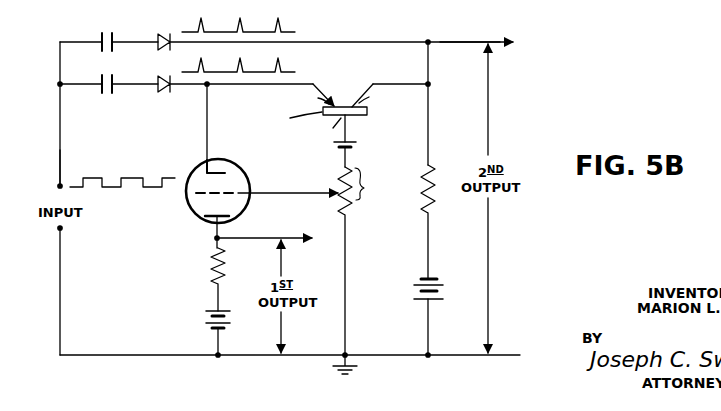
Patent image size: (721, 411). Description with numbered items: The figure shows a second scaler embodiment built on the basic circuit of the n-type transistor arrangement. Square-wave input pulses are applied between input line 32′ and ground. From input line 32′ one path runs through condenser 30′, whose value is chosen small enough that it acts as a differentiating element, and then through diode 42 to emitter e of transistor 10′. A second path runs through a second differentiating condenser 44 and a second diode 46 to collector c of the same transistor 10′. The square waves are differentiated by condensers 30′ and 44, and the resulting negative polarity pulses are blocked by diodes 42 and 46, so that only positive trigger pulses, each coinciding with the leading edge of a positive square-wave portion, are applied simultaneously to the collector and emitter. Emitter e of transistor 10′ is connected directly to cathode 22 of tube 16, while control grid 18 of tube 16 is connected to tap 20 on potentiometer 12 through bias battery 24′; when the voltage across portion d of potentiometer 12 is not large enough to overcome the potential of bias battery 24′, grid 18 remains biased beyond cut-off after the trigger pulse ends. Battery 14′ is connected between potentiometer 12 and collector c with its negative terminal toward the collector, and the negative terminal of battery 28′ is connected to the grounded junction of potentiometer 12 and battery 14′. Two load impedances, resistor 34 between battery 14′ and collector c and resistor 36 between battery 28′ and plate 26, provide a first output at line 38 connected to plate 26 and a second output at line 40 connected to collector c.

The second differentiating condenser 44 is at (103, 37).
The second diode 46 is at (161, 37).
The condenser 30′ is at (105, 93).
The diode 42 is at (167, 92).
The input line 32′ is at (58, 143).
The line 40 is at (466, 44).
The tube 16 is at (186, 200).
The cathode 22 is at (222, 173).
The control grid 18 is at (233, 196).
The plate 26 is at (208, 220).
The resistor 36 is at (226, 265).
The battery 28′ is at (205, 327).
The line 38 is at (291, 240).
The transistor 10′ is at (367, 111).
The bias battery 24′ is at (354, 148).
The potentiometer 12 is at (349, 206).
The tap 20 is at (336, 191).
The resistor 34 is at (433, 200).
The battery 14′ is at (421, 291).